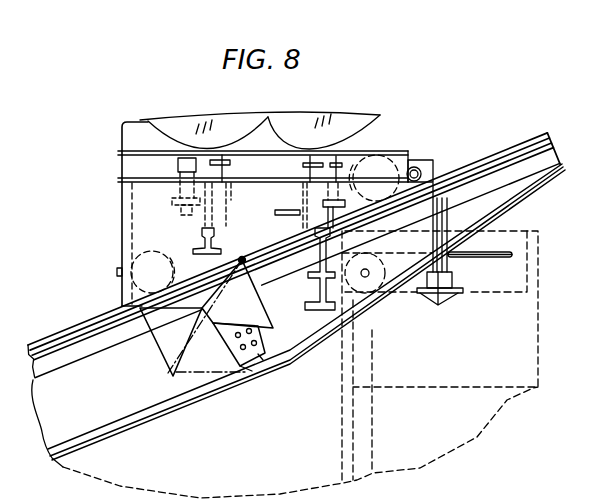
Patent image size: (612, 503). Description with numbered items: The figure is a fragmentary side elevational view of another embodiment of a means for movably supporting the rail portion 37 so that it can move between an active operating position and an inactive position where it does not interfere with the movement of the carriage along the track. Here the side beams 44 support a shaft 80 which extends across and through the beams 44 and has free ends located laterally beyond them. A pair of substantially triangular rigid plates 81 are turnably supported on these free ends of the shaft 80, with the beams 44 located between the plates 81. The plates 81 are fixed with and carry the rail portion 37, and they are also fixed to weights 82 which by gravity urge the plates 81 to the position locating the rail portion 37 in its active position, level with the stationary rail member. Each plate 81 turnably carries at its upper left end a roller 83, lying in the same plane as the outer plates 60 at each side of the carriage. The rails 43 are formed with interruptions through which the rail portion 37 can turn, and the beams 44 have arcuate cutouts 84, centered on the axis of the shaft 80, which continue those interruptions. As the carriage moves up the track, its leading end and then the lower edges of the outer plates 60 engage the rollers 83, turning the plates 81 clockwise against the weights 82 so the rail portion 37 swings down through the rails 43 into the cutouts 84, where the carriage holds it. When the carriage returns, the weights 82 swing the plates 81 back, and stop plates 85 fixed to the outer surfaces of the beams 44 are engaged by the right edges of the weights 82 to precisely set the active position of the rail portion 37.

The rail portion 37 is at (255, 269).
The rails 43 is at (95, 320).
The side beams 44 is at (108, 416).
The outer plates 60 is at (178, 196).
The shaft 80 is at (210, 316).
The triangular rigid plates 81 is at (250, 320).
The weights 82 is at (165, 339).
The roller 83 is at (246, 258).
The arcuate cutouts 84 is at (303, 274).
The stop plates 85 is at (258, 357).